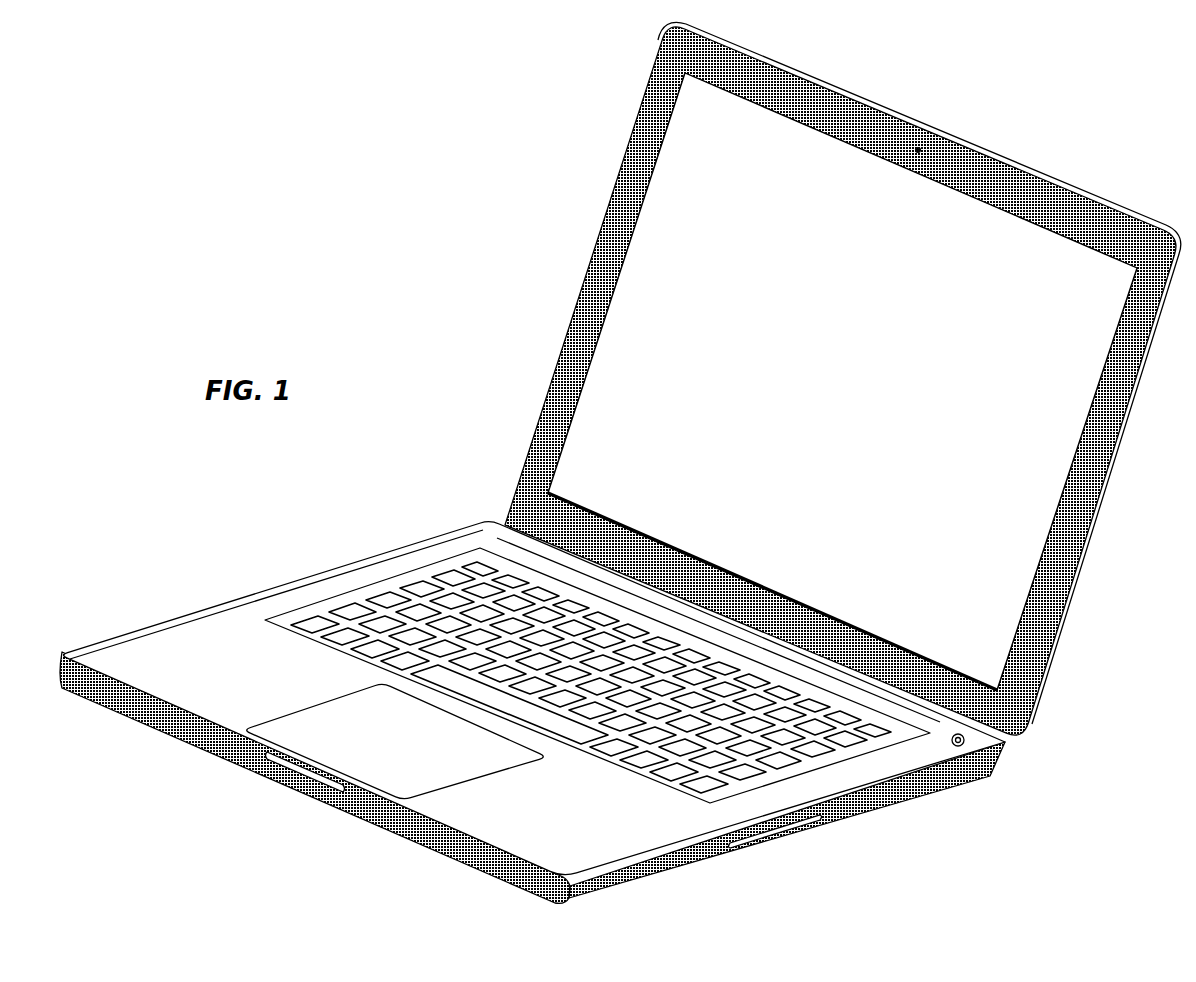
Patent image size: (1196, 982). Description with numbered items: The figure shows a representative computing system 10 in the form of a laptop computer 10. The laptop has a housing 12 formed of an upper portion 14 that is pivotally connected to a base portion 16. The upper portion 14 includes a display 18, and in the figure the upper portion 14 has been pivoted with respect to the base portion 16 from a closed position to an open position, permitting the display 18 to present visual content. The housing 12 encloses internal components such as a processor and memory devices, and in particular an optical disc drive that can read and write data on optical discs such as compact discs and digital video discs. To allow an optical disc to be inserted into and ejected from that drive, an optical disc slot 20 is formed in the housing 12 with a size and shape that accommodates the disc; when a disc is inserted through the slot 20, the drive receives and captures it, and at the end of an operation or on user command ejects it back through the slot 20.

The computing system 10 is at (336, 238).
The housing 12 is at (367, 497).
The upper portion 14 is at (1068, 650).
The base portion 16 is at (432, 543).
The display 18 is at (842, 381).
The optical disc slot 20 is at (821, 820).